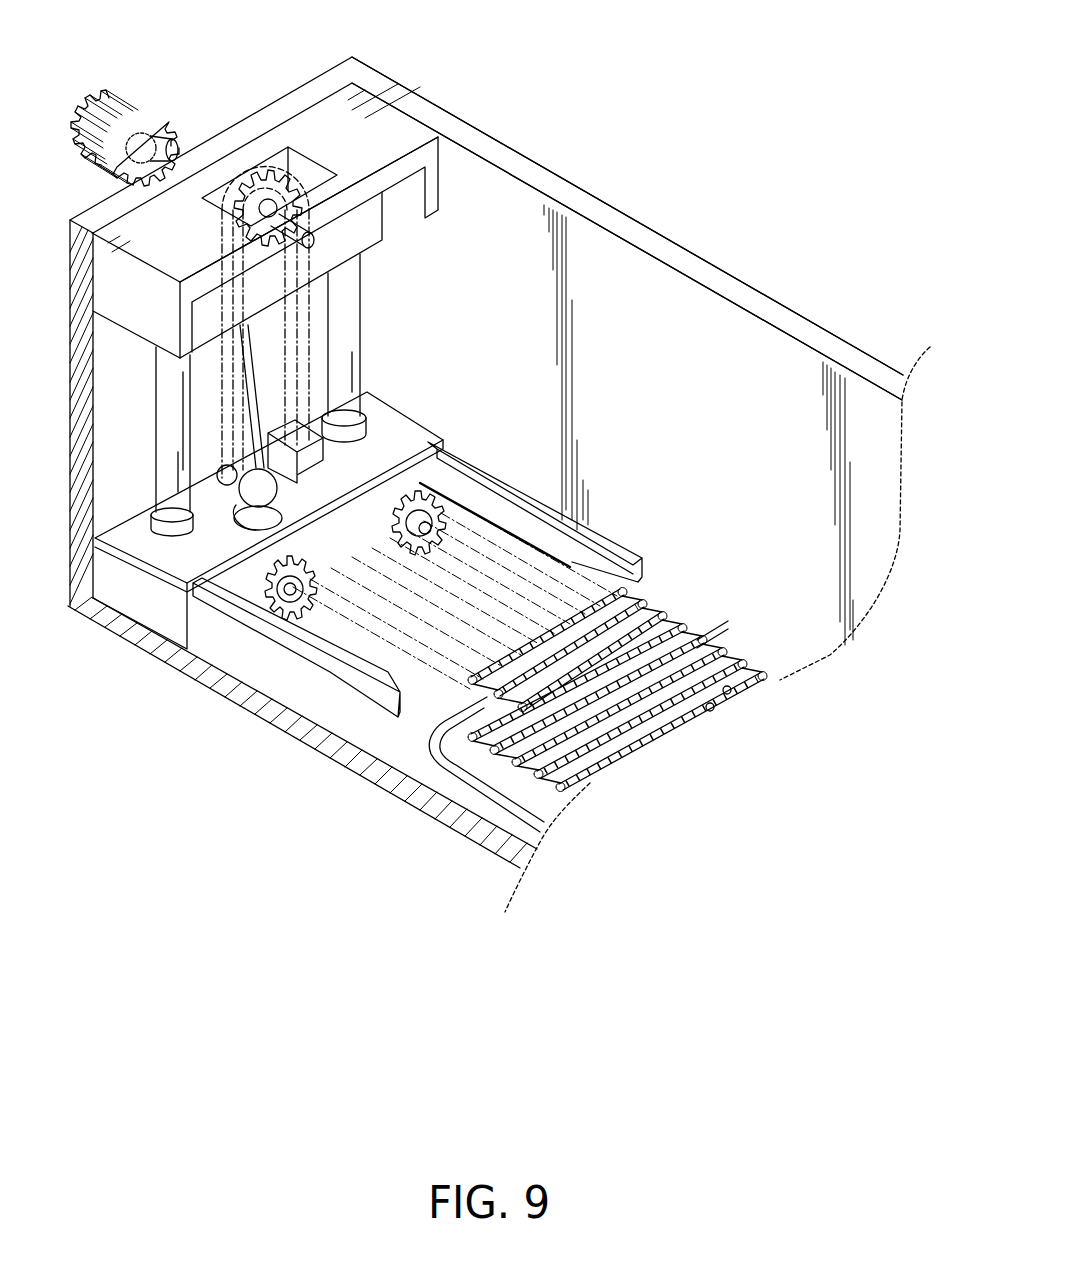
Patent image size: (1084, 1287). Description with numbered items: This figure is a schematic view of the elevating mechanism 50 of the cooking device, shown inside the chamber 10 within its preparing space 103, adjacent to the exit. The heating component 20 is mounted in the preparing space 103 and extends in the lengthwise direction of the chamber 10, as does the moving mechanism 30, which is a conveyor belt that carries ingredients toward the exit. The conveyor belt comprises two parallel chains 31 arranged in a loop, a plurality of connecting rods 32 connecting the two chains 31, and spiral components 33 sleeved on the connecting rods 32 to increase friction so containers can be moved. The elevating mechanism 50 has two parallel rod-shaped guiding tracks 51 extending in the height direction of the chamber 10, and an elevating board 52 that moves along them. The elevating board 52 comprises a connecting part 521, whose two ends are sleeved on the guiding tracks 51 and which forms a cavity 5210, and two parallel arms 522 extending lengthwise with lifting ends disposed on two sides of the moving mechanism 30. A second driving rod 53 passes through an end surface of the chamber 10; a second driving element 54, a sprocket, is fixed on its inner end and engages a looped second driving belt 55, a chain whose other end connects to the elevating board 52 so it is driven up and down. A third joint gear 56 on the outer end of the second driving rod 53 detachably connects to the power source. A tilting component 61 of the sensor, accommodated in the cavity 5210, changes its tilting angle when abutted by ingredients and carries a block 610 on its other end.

The chamber 10 is at (730, 261).
The preparing space 103 is at (627, 263).
The heating component 20 is at (500, 800).
The moving mechanism 30 is at (652, 742).
The chain 31 is at (697, 640).
The connecting rod 32 is at (727, 690).
The spiral component 33 is at (710, 707).
The elevating mechanism 50 is at (437, 340).
The guiding track 51 is at (167, 395).
The elevating board 52 is at (307, 668).
The connecting part 521 is at (173, 570).
The cavity 5210 is at (280, 515).
The arm 522 is at (357, 662).
The second driving rod 53 is at (169, 156).
The second driving element 54 is at (270, 180).
The second driving belt 55 is at (310, 305).
The third joint gear 56 is at (128, 92).
The tilting component 61 is at (245, 413).
The block 610 is at (272, 488).